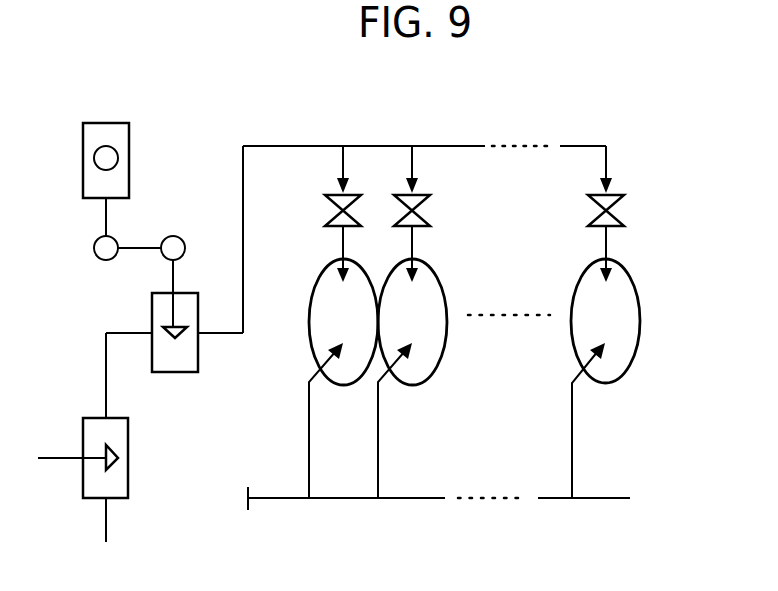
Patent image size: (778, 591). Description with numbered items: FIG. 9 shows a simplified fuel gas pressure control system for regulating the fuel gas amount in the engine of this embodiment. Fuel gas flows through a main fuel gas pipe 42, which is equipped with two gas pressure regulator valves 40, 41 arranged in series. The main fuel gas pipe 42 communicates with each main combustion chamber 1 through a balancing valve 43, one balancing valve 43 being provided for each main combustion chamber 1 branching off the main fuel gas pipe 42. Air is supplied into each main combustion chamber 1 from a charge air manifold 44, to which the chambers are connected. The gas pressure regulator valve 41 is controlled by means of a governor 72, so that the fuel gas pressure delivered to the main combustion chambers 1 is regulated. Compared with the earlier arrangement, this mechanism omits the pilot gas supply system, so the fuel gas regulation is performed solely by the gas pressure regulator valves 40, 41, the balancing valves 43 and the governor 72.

The main combustion chamber 1 is at (323, 297).
The gas pressure regulator valve 40 is at (121, 470).
The gas pressure regulator valve 41 is at (198, 348).
The main fuel gas pipe 42 is at (295, 146).
The balancing valve 43 is at (335, 207).
The charge air manifold 44 is at (602, 497).
The governor 72 is at (117, 173).